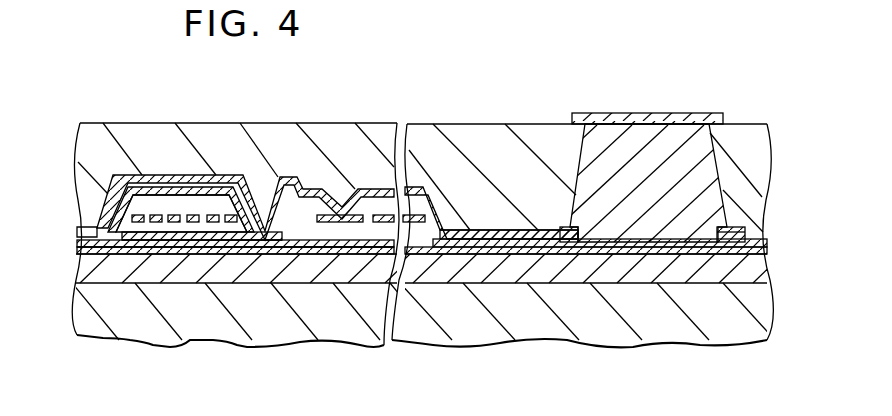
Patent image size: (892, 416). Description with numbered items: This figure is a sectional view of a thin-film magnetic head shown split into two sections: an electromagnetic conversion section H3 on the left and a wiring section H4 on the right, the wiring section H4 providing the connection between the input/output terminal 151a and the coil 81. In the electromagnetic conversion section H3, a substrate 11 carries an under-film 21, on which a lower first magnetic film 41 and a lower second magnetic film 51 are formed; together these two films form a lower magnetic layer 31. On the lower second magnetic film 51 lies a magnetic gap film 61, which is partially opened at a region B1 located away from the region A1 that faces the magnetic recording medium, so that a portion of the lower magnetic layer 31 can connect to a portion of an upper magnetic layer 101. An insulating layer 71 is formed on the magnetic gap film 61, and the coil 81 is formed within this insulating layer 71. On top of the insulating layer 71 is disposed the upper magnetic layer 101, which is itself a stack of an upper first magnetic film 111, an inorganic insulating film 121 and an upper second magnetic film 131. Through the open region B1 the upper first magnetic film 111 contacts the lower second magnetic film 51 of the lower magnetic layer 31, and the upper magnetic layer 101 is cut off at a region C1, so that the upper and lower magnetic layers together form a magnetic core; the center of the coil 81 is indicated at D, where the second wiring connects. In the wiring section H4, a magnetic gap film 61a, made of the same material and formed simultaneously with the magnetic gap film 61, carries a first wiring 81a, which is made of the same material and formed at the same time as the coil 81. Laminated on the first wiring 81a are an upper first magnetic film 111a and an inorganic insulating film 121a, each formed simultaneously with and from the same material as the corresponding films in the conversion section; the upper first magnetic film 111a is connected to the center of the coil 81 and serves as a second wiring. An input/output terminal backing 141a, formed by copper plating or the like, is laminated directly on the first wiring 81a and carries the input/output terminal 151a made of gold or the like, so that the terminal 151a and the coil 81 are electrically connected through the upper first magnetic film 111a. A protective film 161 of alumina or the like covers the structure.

The substrate 11 is at (185, 320).
The under-film 21 is at (300, 277).
The lower magnetic layer 31 is at (160, 247).
The lower first magnetic film 41 is at (132, 254).
The lower second magnetic film 51 is at (222, 240).
The magnetic gap film 61 is at (258, 247).
The insulating layer 71 is at (258, 205).
The coil 81 is at (196, 214).
The upper magnetic layer 101 is at (174, 165).
The upper first magnetic film 111 is at (140, 198).
The inorganic insulating film 121 is at (225, 200).
The upper second magnetic film 131 is at (118, 190).
The protective film 161 is at (370, 143).
The open region B1 is at (288, 180).
The cut-off region C1 is at (325, 190).
The drain region D is at (352, 247).
The region facing magnetic recording medium A1 is at (78, 224).
The electromagnetic conversion section H3 is at (72, 145).
The wiring section H4 is at (774, 119).
The inorganic insulating film 121a is at (497, 230).
The upper first magnetic film 111a is at (547, 232).
The first wiring 81a is at (480, 254).
The magnetic gap film 61a is at (563, 254).
The input/output terminal backing 141a is at (692, 142).
The input/output terminal 151a is at (653, 118).